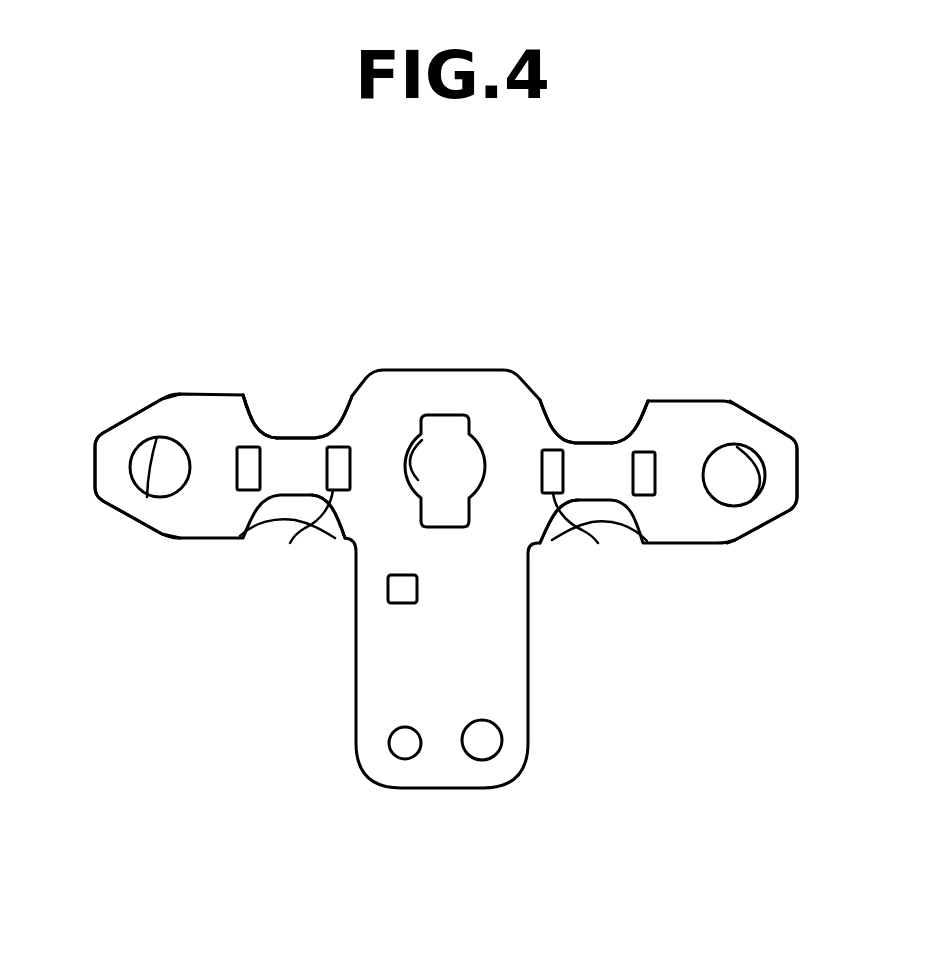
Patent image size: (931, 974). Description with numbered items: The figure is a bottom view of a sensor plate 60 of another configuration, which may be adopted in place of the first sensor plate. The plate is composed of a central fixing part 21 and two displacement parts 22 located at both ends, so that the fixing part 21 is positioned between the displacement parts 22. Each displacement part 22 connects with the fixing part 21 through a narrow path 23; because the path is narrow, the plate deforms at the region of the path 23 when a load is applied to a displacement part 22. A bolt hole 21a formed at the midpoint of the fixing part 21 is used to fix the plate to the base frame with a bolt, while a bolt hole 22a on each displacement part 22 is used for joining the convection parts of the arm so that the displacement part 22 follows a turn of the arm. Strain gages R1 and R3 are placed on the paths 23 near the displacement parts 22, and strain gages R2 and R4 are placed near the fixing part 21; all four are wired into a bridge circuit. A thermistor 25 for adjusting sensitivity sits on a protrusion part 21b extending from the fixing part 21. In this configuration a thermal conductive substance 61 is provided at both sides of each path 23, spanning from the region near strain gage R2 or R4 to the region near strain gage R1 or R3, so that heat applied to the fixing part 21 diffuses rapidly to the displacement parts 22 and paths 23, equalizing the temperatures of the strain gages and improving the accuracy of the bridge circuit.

The sensor plate 60 is at (410, 371).
The fixing part 21 is at (513, 398).
The bolt hole 21a is at (418, 428).
The protrusion part 21b is at (448, 680).
The displacement part 22 is at (182, 510).
The bolt hole 22a is at (155, 478).
The path 23 is at (328, 414).
The thermistor 25 is at (403, 603).
The thermal conductive substance 61 is at (298, 467).
The strain gage R1 is at (245, 400).
The strain gage R2 is at (287, 542).
The strain gage R3 is at (683, 400).
The strain gage R4 is at (588, 543).